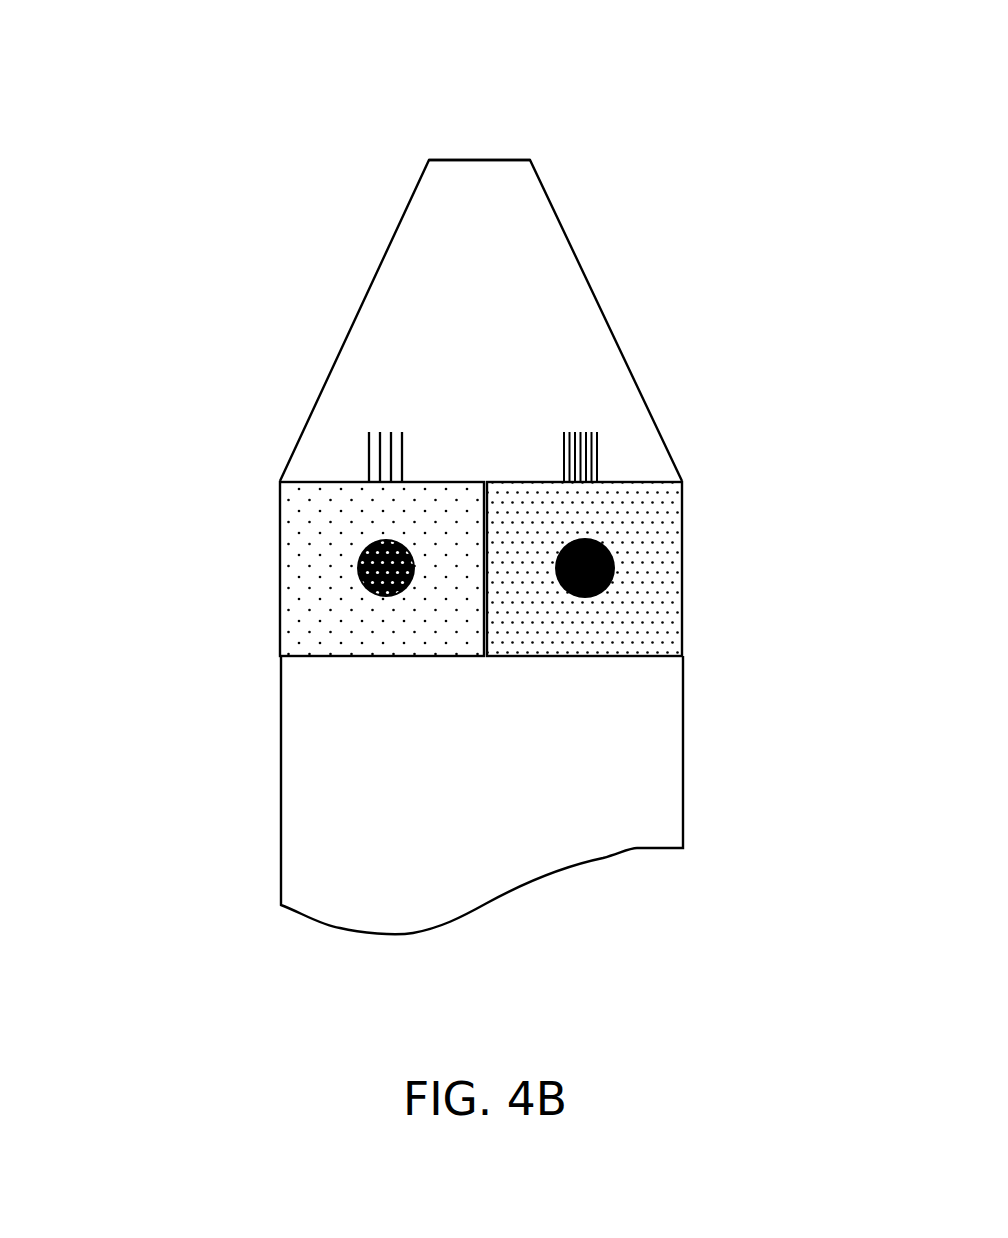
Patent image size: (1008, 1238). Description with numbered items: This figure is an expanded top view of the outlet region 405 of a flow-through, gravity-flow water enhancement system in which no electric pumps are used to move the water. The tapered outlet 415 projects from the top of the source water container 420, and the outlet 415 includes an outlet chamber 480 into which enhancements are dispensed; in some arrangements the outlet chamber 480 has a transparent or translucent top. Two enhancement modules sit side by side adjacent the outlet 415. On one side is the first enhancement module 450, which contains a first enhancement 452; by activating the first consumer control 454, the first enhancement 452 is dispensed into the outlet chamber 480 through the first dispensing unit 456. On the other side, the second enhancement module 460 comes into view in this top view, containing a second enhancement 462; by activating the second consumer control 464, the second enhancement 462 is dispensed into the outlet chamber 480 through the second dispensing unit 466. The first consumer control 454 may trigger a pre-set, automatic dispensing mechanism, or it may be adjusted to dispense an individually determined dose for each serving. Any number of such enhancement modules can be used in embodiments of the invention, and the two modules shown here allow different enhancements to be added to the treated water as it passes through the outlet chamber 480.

The outlet region 405 is at (246, 117).
The outlet 415 is at (609, 227).
The source water container 420 is at (443, 777).
The first enhancement module 450 is at (719, 577).
The first enhancement 452 is at (657, 625).
The first consumer control 454 is at (611, 560).
The first dispensing unit 456 is at (573, 443).
The second enhancement module 460 is at (224, 577).
The second enhancement 462 is at (320, 627).
The second consumer control 464 is at (358, 553).
The second dispensing unit 466 is at (388, 443).
The outlet chamber 480 is at (453, 330).